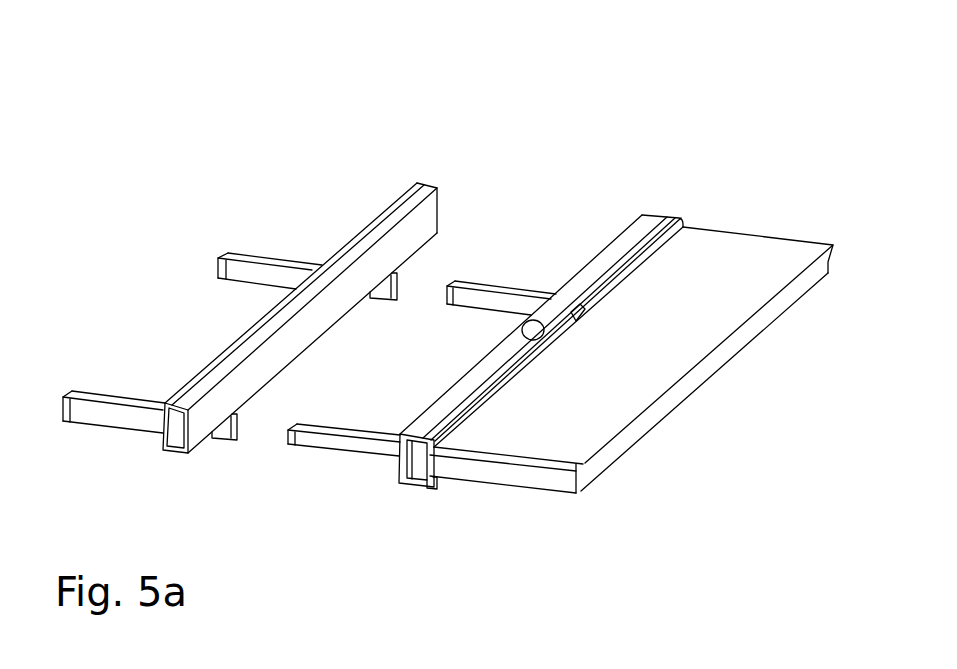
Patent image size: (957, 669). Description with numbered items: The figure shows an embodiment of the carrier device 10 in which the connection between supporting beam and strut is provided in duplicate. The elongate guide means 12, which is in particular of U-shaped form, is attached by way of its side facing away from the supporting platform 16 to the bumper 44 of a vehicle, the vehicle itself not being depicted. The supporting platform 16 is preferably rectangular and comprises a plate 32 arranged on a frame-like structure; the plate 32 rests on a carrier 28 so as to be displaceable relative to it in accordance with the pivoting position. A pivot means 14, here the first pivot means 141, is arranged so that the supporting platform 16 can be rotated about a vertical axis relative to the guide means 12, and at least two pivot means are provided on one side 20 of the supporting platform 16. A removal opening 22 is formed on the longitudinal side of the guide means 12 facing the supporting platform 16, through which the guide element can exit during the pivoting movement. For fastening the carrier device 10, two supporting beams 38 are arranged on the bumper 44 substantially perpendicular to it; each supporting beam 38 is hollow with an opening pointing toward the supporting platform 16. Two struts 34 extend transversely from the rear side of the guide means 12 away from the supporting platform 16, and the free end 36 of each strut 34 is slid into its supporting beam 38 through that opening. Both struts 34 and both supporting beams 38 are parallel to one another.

The carrier device 10 is at (529, 147).
The guide means 12 is at (610, 257).
The pivot means 14 is at (422, 467).
The first pivot means 141 is at (380, 487).
The supporting platform 16 is at (760, 283).
The side of the supporting platform 20 is at (640, 257).
The removal opening 22 is at (583, 322).
The carrier 28 is at (563, 478).
The plate 32 is at (720, 328).
The strut 34 is at (510, 303).
The free end 36 is at (447, 283).
The supporting beam 38 is at (237, 430).
The bumper 44 is at (387, 210).